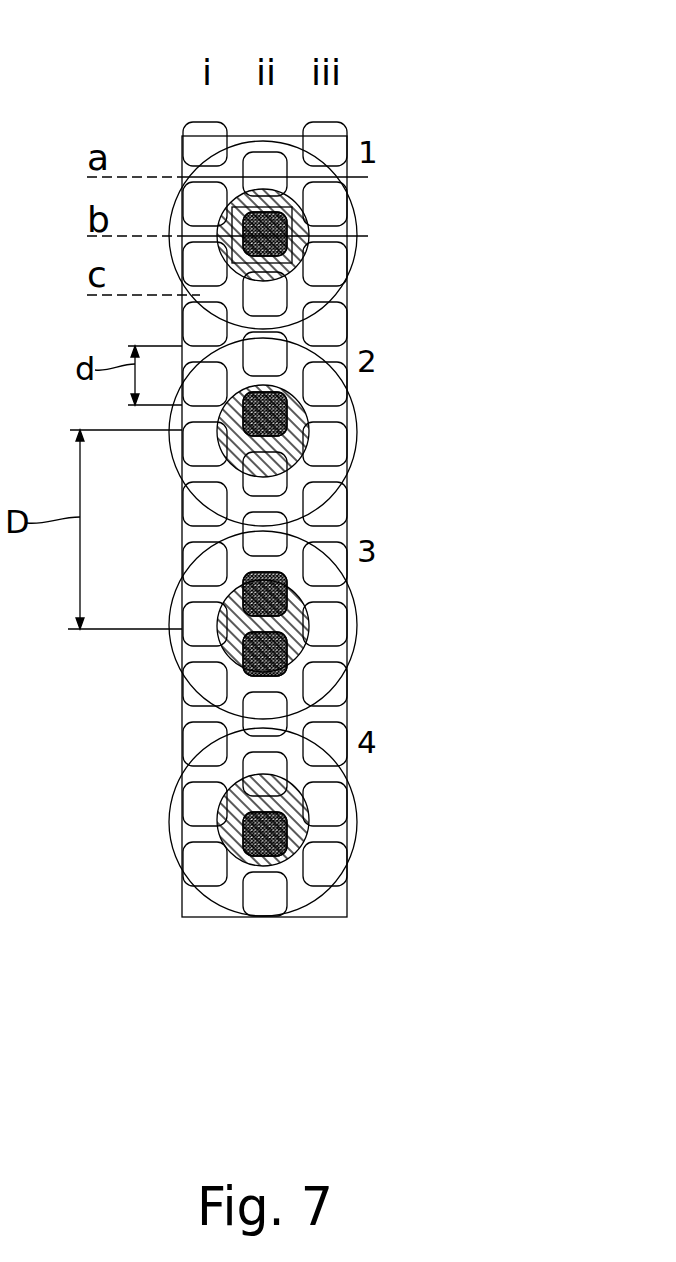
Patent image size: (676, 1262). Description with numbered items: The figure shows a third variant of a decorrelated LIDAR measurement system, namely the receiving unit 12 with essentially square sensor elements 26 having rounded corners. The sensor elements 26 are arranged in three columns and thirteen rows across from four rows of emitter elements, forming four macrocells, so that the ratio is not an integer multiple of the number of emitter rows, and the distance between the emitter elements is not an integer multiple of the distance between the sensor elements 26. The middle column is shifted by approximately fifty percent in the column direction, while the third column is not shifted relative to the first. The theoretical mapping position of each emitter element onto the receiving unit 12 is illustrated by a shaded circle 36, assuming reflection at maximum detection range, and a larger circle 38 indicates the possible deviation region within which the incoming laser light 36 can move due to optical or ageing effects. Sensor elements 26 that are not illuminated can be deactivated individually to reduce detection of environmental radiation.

The receiving unit 12 is at (162, 937).
The sensor elements 26 is at (326, 147).
The circle 36 is at (308, 233).
The circle 38 is at (358, 248).